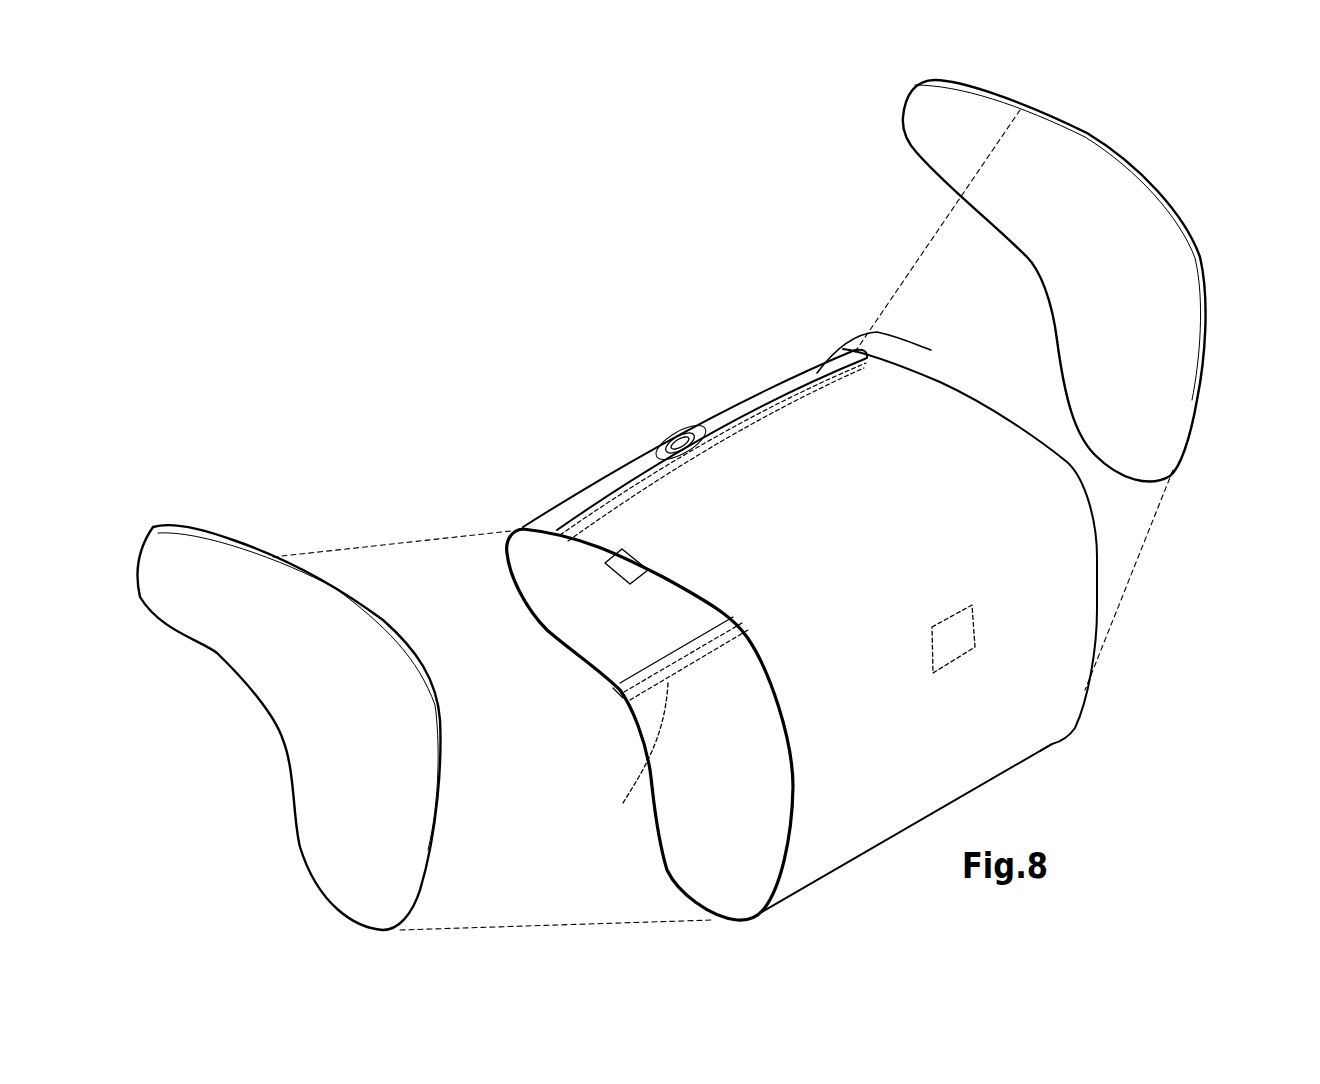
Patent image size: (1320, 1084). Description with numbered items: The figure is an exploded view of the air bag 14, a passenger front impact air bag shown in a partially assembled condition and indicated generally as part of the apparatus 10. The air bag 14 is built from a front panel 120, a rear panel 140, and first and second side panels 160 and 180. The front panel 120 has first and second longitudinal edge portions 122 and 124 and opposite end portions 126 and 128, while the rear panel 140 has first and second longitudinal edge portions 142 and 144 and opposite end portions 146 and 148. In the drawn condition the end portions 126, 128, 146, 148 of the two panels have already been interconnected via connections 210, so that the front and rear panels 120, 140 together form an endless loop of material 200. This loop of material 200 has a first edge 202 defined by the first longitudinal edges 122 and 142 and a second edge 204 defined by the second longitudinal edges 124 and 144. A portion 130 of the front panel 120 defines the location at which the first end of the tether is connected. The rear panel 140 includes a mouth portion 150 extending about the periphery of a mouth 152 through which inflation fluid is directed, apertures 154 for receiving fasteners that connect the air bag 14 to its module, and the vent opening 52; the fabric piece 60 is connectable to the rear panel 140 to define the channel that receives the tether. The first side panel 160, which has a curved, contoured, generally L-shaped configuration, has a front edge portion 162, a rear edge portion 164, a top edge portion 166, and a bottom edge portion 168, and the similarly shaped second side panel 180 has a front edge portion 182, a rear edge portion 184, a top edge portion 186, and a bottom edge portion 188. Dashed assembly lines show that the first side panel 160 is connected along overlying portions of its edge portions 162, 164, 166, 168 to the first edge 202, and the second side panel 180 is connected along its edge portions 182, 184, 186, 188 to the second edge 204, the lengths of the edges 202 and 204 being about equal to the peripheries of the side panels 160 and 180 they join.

The child support system 10 is at (605, 285).
The air bag 14 is at (572, 348).
The vent opening 52 is at (675, 438).
The fabric piece 60 is at (679, 420).
The front panel 120 is at (1017, 690).
The first longitudinal edge portion 122 is at (793, 753).
The second longitudinal edge portion 124 is at (1098, 610).
The end portion 126 is at (815, 370).
The end portion 128 is at (650, 687).
The portion of the front panel 130 is at (943, 620).
The rear panel 140 is at (781, 381).
The first longitudinal edge portion 142 is at (513, 568).
The second longitudinal edge portion 144 is at (931, 350).
The end portion 146 is at (737, 433).
The end portion 148 is at (627, 759).
The mouth portion 150 is at (605, 563).
The mouth 152 is at (628, 584).
The apertures 154 is at (648, 572).
The first side panel 160 is at (297, 680).
The front edge portion 162 is at (437, 833).
The rear edge portion 164 is at (137, 543).
The top edge portion 166 is at (237, 543).
The bottom edge portion 168 is at (283, 740).
The second side panel 180 is at (1103, 193).
The front edge portion 182 is at (1203, 390).
The rear edge portion 184 is at (903, 117).
The top edge portion 186 is at (1053, 117).
The bottom edge portion 188 is at (1050, 297).
The endless loop of material 200 is at (987, 757).
The first edge 202 is at (673, 873).
The second edge 204 is at (1098, 560).
The connections 210 is at (687, 653).